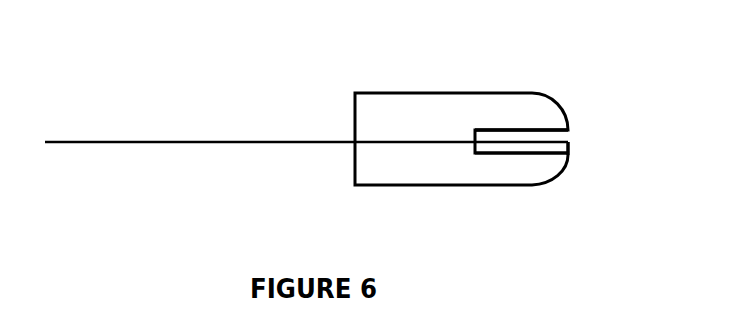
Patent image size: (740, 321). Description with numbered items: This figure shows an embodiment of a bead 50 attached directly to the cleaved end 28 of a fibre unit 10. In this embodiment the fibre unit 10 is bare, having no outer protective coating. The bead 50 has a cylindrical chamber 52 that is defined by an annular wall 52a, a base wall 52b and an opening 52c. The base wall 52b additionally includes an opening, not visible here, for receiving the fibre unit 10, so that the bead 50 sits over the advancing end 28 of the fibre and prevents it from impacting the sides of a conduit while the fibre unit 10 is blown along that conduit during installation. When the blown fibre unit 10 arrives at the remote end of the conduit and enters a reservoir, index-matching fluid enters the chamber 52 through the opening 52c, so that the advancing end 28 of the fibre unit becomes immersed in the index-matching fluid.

The fibre unit 10 is at (125, 142).
The bead 50 is at (420, 70).
The cylindrical chamber 52 is at (536, 134).
The annular wall 52a is at (499, 128).
The base wall 52b is at (476, 149).
The opening 52c is at (574, 132).
The cleaved end 28 is at (570, 154).